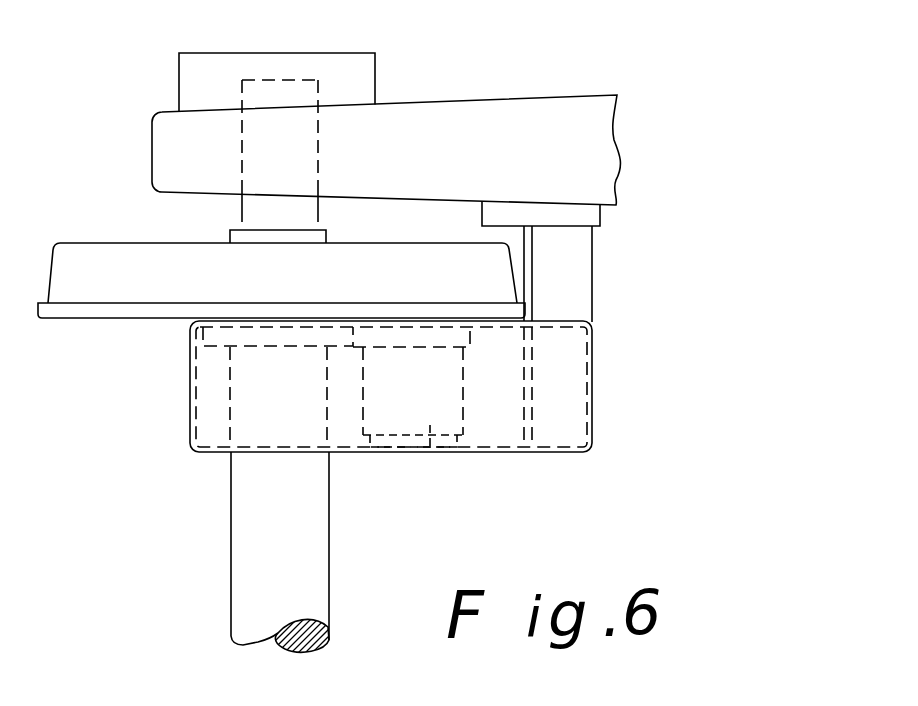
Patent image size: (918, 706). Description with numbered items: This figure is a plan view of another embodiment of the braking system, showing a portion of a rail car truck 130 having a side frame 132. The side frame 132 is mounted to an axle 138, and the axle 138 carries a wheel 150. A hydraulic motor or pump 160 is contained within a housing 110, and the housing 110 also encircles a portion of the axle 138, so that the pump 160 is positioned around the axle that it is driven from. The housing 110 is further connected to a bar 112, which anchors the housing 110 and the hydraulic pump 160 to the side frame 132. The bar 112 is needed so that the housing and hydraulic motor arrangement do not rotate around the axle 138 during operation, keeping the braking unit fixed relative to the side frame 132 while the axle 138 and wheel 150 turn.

The rail car truck 130 is at (463, 70).
The side frame 132 is at (505, 126).
The wheel 150 is at (133, 269).
The bar 112 is at (578, 280).
The housing 110 is at (206, 405).
The hydraulic motor or pump 160 is at (425, 458).
The axle 138 is at (315, 530).